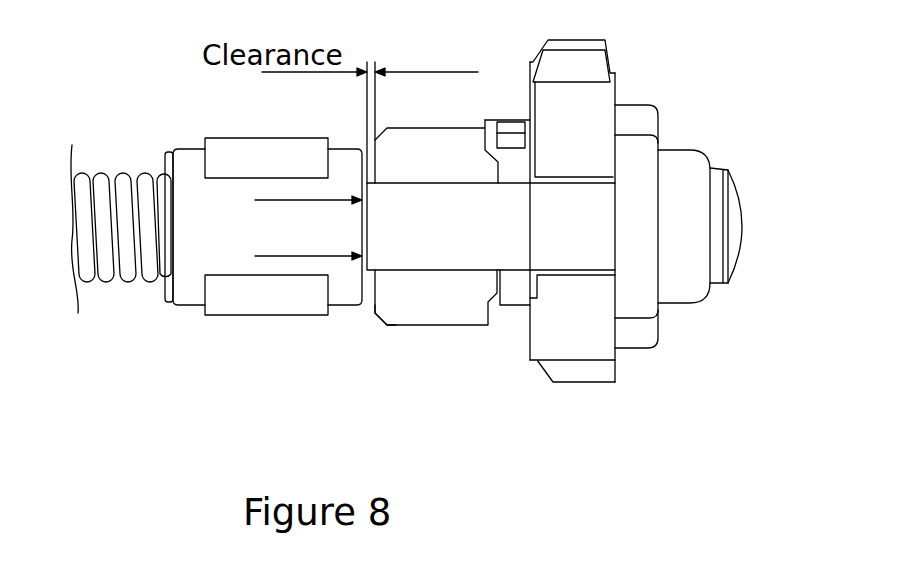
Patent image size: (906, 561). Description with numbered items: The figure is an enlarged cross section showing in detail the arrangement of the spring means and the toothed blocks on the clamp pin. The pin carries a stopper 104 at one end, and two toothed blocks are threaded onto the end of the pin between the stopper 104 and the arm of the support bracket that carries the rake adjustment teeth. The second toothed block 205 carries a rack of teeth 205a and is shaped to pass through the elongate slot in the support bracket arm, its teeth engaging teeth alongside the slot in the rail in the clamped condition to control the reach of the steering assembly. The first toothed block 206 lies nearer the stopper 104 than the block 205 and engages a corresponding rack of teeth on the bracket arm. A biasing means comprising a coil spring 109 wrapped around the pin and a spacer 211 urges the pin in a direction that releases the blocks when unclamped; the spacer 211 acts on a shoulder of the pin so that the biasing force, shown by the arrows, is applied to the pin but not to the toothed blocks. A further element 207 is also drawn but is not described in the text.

The stopper 104 is at (616, 122).
The coil spring 109 is at (130, 284).
The second toothed block 205 is at (447, 305).
The rack of teeth 205a is at (382, 318).
The first toothed block 206 is at (539, 363).
The locking member 207 is at (503, 118).
The spacer 211 is at (187, 307).